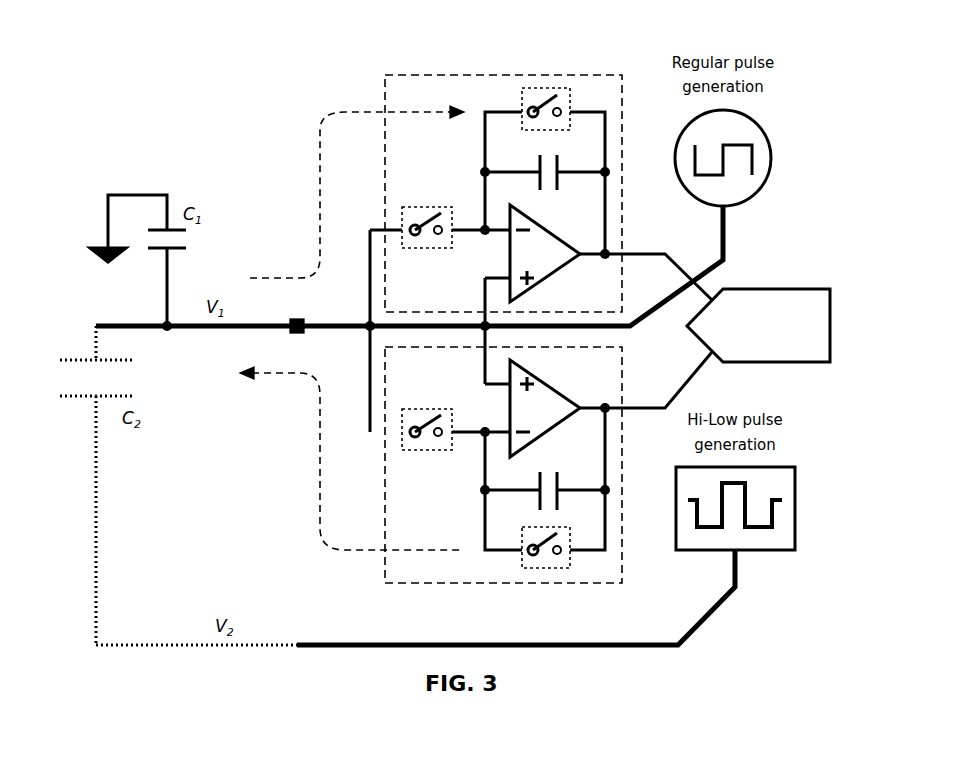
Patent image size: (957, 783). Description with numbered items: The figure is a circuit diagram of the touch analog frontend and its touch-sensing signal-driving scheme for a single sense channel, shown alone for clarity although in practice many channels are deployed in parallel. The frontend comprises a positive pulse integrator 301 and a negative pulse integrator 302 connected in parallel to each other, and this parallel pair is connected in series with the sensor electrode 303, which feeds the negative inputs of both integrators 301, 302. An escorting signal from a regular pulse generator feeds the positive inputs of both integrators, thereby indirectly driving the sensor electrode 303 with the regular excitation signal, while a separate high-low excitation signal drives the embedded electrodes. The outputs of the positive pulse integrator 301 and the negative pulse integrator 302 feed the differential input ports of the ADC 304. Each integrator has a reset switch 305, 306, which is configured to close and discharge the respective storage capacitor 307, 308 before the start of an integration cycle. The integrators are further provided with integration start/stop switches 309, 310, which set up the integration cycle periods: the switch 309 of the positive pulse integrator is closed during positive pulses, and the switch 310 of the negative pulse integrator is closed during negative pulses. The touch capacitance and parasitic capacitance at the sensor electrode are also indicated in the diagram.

The positive pulse integrator 301 is at (385, 555).
The negative pulse integrator 302 is at (385, 100).
The sensor electrode 303 is at (290, 322).
The ADC 304 is at (787, 287).
The reset switch 305 is at (578, 562).
The reset switch 306 is at (545, 92).
The storage capacitor 307 is at (565, 487).
The storage capacitor 308 is at (565, 180).
The integration start/stop switch 309 is at (398, 440).
The integration start/stop switch 310 is at (397, 220).